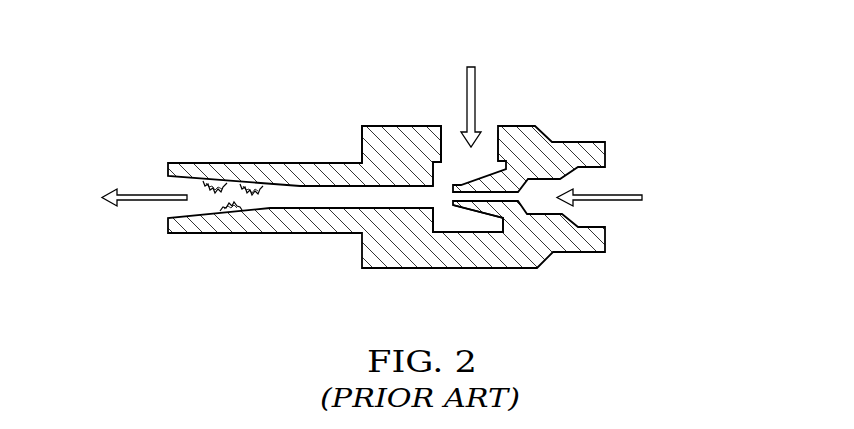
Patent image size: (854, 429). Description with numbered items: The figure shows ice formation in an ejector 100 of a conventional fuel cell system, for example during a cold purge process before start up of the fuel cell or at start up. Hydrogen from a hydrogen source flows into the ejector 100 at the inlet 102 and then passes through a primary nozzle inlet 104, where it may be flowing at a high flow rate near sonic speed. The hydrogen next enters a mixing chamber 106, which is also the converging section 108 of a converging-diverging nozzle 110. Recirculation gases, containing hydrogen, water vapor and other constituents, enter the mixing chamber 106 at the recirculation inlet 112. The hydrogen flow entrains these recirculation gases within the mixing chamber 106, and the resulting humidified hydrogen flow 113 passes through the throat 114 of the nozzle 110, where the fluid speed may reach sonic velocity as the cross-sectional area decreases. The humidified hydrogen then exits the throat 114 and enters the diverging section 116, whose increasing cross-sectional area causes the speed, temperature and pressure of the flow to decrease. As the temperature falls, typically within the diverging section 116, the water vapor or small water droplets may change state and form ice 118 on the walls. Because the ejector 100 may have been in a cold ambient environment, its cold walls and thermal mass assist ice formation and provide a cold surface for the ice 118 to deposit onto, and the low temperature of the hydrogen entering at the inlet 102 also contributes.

The ejector 100 is at (530, 257).
The hydrogen inlet 102 is at (607, 190).
The primary nozzle inlet 104 is at (458, 186).
The mixing chamber 106 is at (453, 158).
The converging section 108 is at (445, 215).
The converging-diverging nozzle 110 is at (422, 224).
The recirculation gas inlet 112 is at (475, 97).
The humidified hydrogen flow 113 is at (152, 193).
The throat 114 is at (385, 142).
The diverging section 116 is at (298, 170).
The ice 118 is at (233, 210).